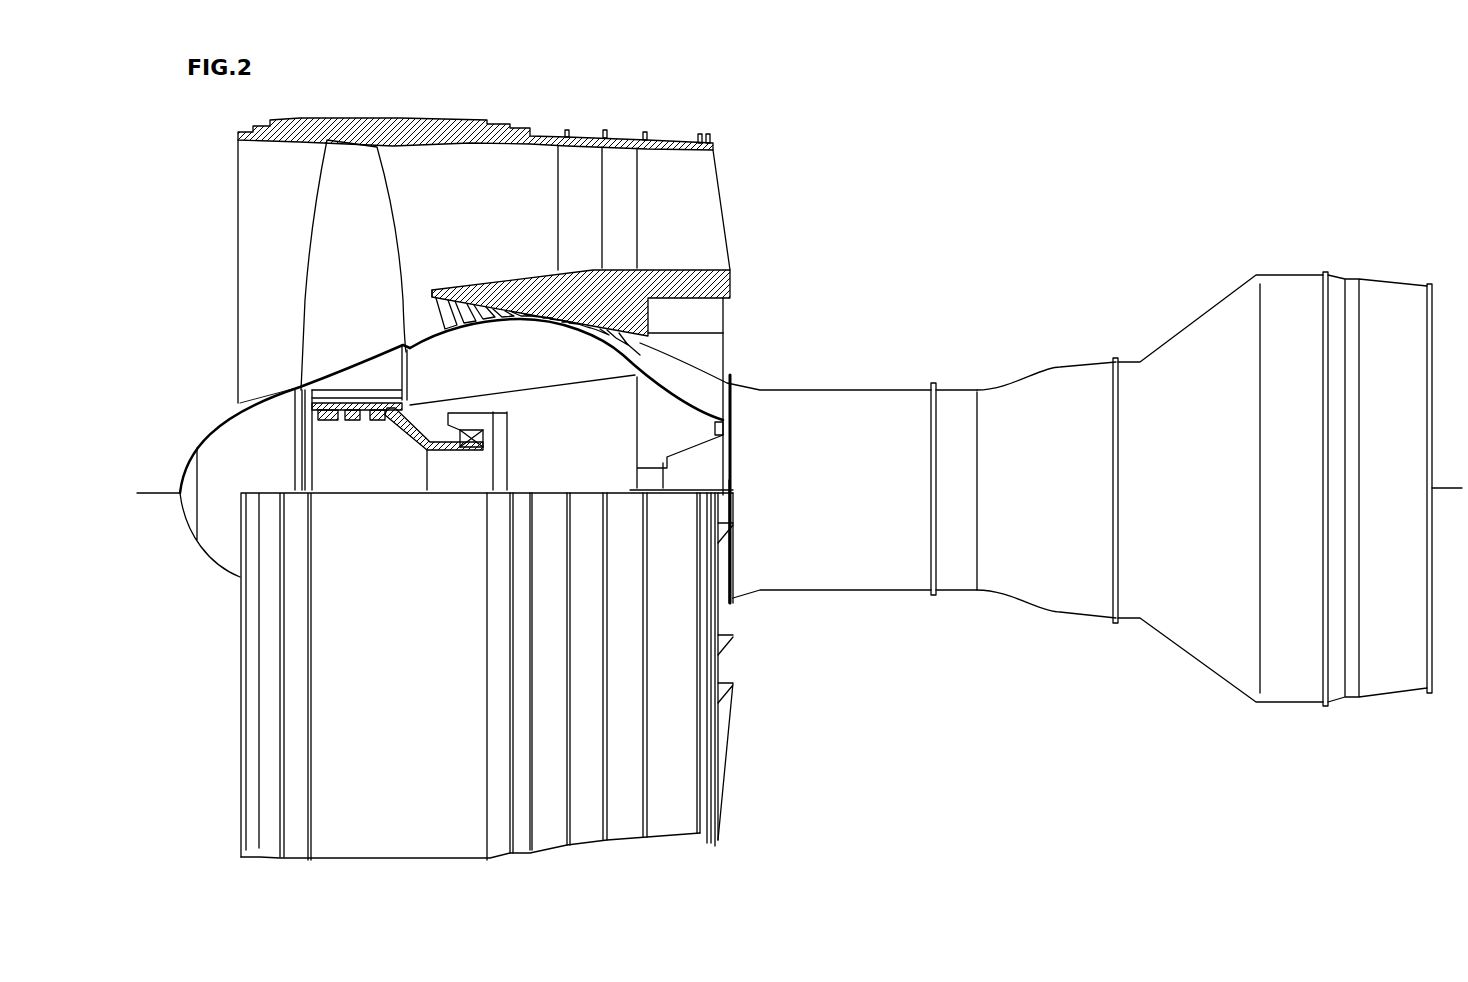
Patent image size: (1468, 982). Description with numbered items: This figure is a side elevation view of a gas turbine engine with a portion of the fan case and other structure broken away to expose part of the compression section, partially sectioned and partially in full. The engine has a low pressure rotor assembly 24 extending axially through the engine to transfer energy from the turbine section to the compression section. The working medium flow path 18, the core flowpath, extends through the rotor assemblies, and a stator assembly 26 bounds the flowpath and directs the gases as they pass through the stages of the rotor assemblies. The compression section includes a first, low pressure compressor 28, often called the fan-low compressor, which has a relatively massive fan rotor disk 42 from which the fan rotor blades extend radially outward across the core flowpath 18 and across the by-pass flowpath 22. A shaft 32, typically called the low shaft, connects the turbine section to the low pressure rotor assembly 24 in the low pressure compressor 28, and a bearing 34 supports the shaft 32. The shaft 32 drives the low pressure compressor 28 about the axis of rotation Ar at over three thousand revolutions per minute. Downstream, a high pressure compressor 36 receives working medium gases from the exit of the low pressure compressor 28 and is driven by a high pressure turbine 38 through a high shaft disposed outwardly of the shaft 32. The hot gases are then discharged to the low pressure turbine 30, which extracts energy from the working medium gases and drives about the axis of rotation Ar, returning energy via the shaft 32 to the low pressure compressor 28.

The working medium flow path 18 is at (408, 317).
The by-pass flowpath 22 is at (428, 208).
The low pressure rotor assembly 24 is at (414, 403).
The stator assembly 26 is at (768, 302).
The low pressure compressor 28 is at (390, 277).
The low pressure turbine 30 is at (1205, 348).
The shaft 32 is at (412, 440).
The bearing 34 is at (472, 432).
The high pressure compressor 36 is at (878, 440).
The high pressure turbine 38 is at (1142, 412).
The fan rotor disk 42 is at (310, 403).
The axis of rotation Ar is at (173, 493).